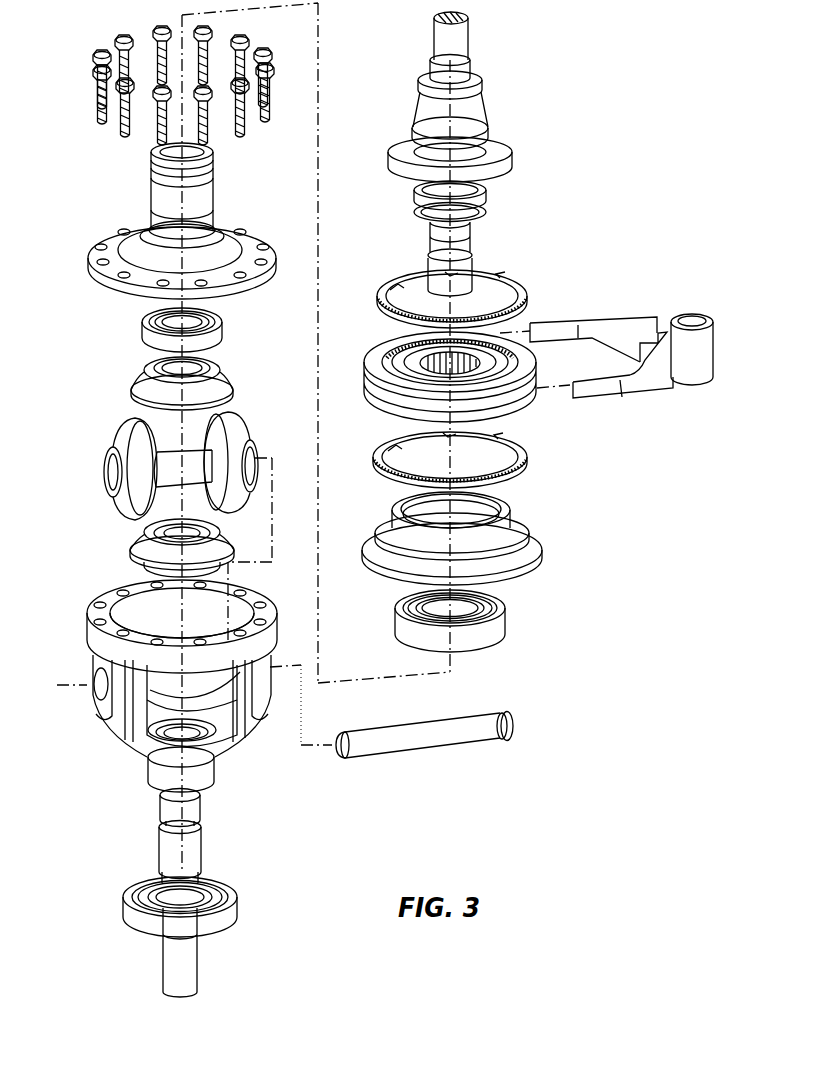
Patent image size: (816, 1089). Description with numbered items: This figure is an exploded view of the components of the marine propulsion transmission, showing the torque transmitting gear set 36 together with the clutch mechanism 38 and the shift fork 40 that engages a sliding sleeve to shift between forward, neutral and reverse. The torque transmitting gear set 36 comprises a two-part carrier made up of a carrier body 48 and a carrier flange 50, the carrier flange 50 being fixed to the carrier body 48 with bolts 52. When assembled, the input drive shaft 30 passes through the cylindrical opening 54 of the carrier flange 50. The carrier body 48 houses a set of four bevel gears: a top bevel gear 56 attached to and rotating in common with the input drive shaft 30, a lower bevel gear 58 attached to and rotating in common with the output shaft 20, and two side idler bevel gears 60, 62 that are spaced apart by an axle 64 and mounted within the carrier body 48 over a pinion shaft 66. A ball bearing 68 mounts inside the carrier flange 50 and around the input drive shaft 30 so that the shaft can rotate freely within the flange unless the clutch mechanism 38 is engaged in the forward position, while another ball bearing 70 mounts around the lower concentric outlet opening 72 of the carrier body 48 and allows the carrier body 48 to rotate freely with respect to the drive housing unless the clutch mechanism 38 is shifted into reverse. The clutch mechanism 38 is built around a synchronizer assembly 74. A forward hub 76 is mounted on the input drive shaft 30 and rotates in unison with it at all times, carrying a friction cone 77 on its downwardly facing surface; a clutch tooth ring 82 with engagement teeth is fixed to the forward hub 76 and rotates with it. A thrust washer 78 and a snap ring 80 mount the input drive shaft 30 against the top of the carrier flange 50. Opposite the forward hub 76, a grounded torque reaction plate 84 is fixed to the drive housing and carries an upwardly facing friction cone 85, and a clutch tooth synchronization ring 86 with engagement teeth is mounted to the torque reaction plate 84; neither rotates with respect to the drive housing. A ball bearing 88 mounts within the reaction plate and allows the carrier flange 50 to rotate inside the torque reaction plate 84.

The output shaft 20 is at (162, 844).
The input drive shaft 30 is at (460, 41).
The torque transmitting gear set 36 is at (49, 185).
The clutch mechanism 38 is at (654, 277).
The shift fork 40 is at (645, 383).
The carrier body 48 is at (88, 637).
The carrier flange 50 is at (252, 238).
The bolts 52 is at (97, 58).
The cylindrical opening 54 is at (192, 152).
The top bevel gear 56 is at (225, 376).
The lower bevel gear 58 is at (136, 538).
The side idler bevel gear 60 is at (120, 442).
The side idler bevel gear 62 is at (222, 428).
The axle 64 is at (172, 462).
The pinion shaft 66 is at (446, 748).
The ball bearing 68 is at (145, 330).
The ball bearing 70 is at (128, 908).
The lower concentric outlet opening 72 is at (146, 763).
The synchronizer assembly 74 is at (527, 398).
The forward hub 76 is at (503, 148).
The friction cone 77 is at (505, 180).
The thrust washer 78 is at (490, 190).
The snap ring 80 is at (484, 218).
The clutch tooth ring 82 is at (512, 286).
The grounded torque reaction plate 84 is at (518, 526).
The friction cone 85 is at (516, 553).
The clutch tooth synchronization ring 86 is at (523, 476).
The ball bearing 88 is at (487, 634).